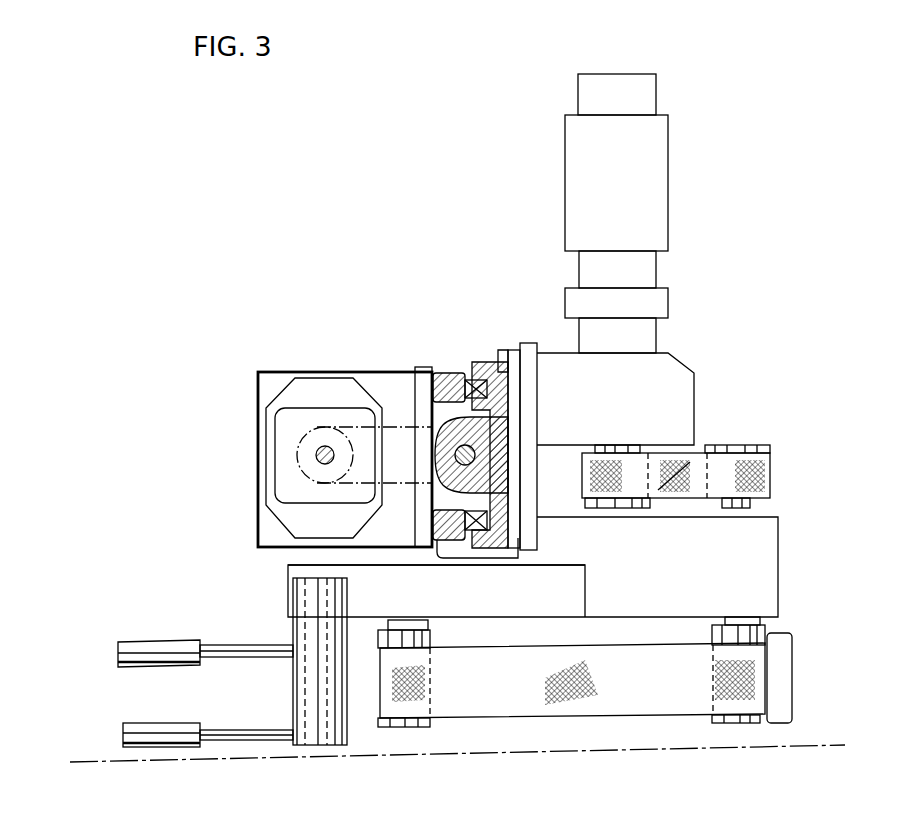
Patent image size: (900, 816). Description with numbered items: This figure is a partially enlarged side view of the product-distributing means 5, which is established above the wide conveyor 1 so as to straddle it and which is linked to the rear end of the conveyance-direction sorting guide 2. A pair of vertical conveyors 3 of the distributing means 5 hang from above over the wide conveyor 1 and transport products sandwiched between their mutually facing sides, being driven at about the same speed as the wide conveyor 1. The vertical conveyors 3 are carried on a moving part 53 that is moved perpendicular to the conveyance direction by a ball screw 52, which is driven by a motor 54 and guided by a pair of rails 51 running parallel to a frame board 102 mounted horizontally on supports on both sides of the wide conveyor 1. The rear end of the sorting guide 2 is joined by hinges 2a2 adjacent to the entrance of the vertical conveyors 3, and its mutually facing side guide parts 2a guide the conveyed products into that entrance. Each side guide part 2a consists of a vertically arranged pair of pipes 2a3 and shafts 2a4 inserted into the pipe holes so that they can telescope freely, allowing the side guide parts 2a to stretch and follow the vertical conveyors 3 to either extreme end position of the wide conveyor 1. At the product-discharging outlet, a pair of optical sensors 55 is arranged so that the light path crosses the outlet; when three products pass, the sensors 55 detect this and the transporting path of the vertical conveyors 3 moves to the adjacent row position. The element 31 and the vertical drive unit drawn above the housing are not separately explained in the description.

The wide conveyor 1 is at (838, 746).
The sorting guide 2 is at (180, 600).
The side guide part 2a is at (201, 697).
The hinge 2a2 is at (318, 738).
The pipe 2a3 is at (152, 650).
The shaft 2a4 is at (233, 650).
The vertical conveyor 3 is at (513, 710).
The actuator cylinder 31 is at (660, 184).
The product-distributing means 5 is at (734, 404).
The rail 51 is at (478, 362).
The ball screw 52 is at (435, 440).
The moving part 53 is at (542, 343).
The motor 54 is at (278, 453).
The optical sensor 55 is at (783, 641).
The frame board 102 is at (423, 367).